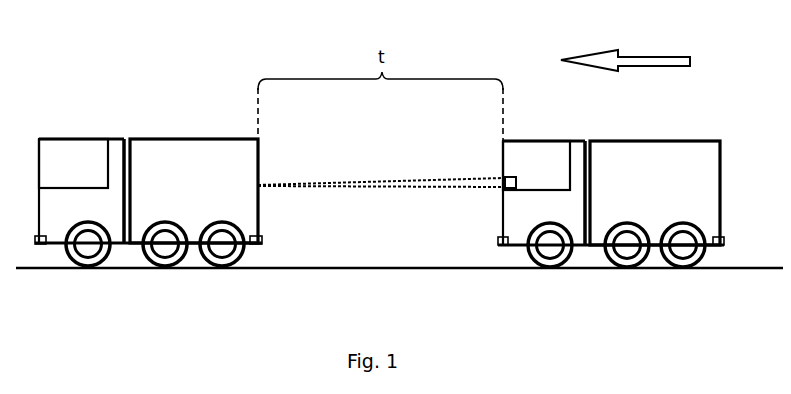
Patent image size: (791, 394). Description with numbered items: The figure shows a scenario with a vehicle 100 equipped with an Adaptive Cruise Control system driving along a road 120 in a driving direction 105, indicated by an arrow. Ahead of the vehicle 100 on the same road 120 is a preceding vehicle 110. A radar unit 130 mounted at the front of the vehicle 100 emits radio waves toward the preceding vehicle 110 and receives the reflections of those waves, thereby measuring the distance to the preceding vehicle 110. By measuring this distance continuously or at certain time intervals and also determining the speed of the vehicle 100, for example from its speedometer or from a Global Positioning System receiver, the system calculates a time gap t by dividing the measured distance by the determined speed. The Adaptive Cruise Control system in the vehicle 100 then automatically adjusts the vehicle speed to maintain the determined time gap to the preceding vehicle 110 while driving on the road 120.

The vehicle 100 is at (672, 191).
The driving direction 105 is at (625, 47).
The preceding vehicle 110 is at (207, 189).
The road 120 is at (303, 269).
The radar unit 130 is at (507, 177).